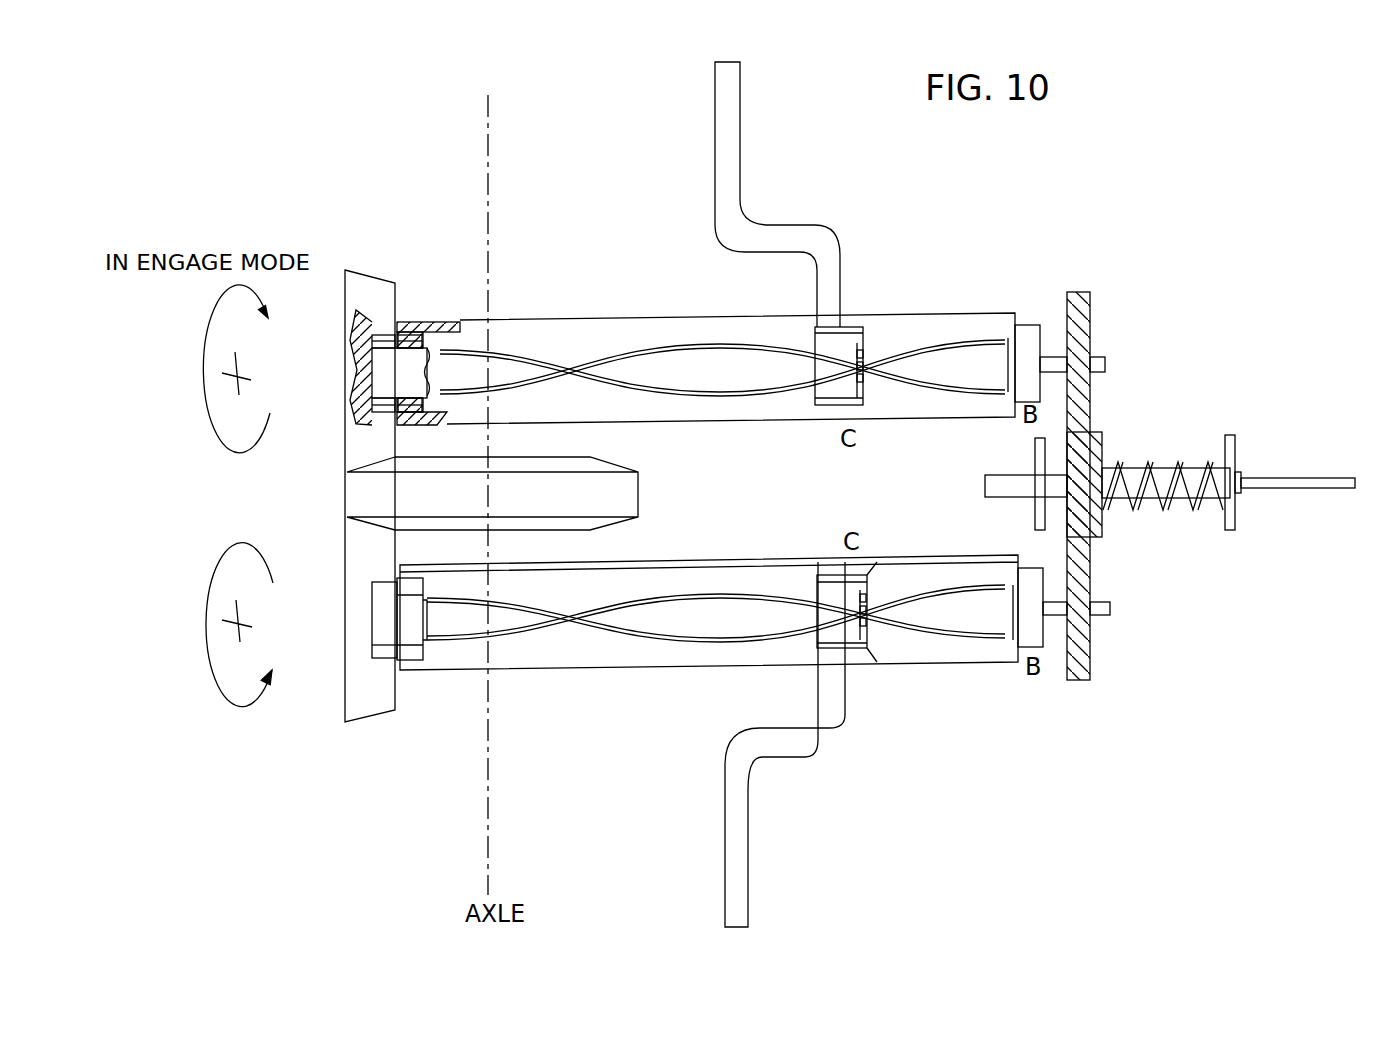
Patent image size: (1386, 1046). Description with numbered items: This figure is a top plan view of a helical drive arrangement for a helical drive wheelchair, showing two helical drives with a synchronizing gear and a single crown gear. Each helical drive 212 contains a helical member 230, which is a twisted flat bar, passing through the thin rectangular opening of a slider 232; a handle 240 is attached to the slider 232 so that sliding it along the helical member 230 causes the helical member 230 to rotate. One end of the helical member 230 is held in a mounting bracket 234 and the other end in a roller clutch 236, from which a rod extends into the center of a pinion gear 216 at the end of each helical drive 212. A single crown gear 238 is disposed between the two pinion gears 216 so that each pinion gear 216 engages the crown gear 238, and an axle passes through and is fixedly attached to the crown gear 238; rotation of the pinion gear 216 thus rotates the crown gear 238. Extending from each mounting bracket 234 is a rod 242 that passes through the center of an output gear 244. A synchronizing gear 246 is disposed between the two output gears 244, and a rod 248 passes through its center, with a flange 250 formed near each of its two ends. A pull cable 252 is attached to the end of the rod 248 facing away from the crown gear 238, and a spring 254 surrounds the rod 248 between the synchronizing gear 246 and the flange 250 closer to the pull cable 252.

The helical drive 212 is at (623, 314).
The pinion gear 216 is at (381, 321).
The helical member 230 is at (974, 336).
The slider 232 is at (852, 326).
The mounting bracket 234 is at (1024, 322).
The roller clutch 236 is at (404, 331).
The crown gear 238 is at (340, 483).
The handle 240 is at (745, 152).
The rod 242 is at (1095, 620).
The output gear 244 is at (1093, 582).
The synchronizing gear 246 is at (1110, 428).
The rod 248 is at (1188, 470).
The flange 250 is at (1040, 505).
The pull cable 252 is at (1275, 470).
The spring 254 is at (1145, 464).